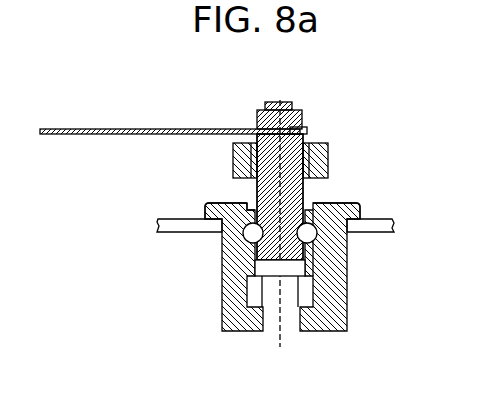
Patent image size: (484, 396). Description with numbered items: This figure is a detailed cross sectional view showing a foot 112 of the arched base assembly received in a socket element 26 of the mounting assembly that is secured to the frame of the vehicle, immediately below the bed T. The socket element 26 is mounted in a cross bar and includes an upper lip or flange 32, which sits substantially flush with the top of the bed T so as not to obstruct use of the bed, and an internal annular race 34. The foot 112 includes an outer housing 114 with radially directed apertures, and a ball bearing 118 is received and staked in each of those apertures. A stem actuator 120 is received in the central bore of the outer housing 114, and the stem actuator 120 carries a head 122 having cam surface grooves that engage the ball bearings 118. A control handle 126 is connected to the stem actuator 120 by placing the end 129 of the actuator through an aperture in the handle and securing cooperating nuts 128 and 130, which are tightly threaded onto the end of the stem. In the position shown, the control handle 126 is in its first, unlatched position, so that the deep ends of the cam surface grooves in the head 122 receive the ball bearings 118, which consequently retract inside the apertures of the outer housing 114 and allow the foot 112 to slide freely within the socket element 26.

The foot 112 is at (394, 91).
The feet receiving socket element 26 is at (333, 322).
The upper lip or flange 32 is at (342, 204).
The internal annular race 34 is at (318, 238).
The bed T is at (188, 218).
The outer housing 114 is at (249, 202).
The ball bearing 118 is at (248, 233).
The stem actuator 120 is at (301, 113).
The head 122 is at (267, 255).
The control handle 126 is at (117, 130).
The nut 128 is at (323, 145).
The end of the actuator 129 is at (270, 101).
The nut 130 is at (257, 118).